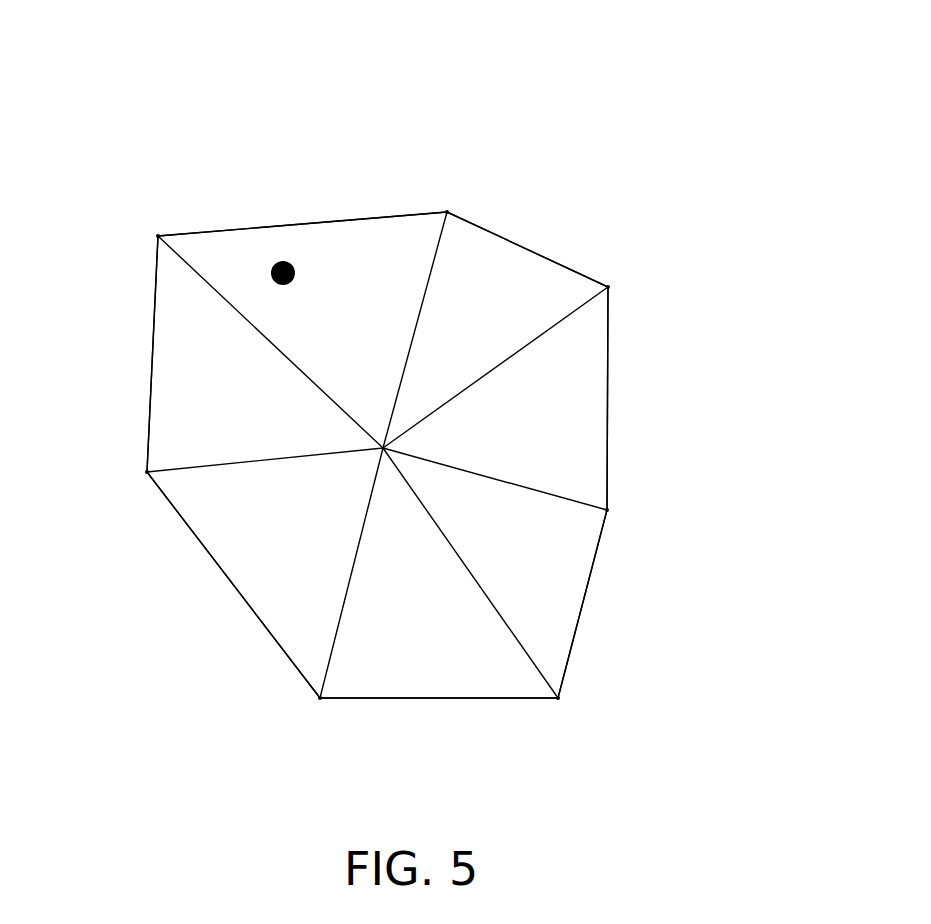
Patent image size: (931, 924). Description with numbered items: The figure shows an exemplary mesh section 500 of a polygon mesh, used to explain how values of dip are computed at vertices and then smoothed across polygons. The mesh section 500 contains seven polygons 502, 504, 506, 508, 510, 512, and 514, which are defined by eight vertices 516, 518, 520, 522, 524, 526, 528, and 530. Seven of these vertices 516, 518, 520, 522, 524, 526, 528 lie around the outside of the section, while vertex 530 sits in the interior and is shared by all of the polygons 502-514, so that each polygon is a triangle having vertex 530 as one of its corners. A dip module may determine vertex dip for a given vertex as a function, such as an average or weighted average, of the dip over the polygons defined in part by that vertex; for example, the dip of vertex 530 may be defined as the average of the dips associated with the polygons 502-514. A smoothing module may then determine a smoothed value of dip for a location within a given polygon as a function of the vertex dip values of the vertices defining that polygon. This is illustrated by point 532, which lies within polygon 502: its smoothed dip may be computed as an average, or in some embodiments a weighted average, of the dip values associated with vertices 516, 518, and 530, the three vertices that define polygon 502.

The mesh section 500 is at (491, 97).
The polygon 502 is at (320, 234).
The polygon 504 is at (512, 272).
The polygon 506 is at (580, 383).
The polygon 508 is at (567, 582).
The polygon 510 is at (430, 686).
The polygon 512 is at (234, 562).
The polygon 514 is at (166, 366).
The vertex 516 is at (158, 236).
The vertex 518 is at (447, 212).
The vertex 520 is at (608, 287).
The vertex 522 is at (607, 510).
The vertex 524 is at (558, 698).
The vertex 526 is at (320, 698).
The vertex 528 is at (147, 472).
The vertex 530 is at (378, 464).
The point 532 is at (297, 284).